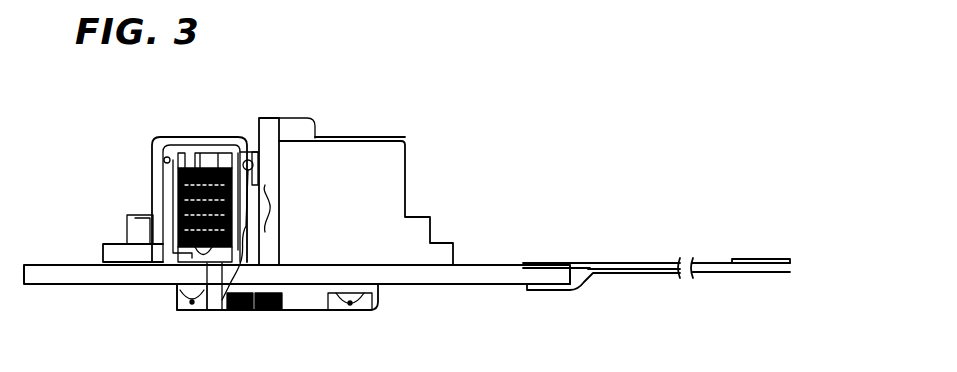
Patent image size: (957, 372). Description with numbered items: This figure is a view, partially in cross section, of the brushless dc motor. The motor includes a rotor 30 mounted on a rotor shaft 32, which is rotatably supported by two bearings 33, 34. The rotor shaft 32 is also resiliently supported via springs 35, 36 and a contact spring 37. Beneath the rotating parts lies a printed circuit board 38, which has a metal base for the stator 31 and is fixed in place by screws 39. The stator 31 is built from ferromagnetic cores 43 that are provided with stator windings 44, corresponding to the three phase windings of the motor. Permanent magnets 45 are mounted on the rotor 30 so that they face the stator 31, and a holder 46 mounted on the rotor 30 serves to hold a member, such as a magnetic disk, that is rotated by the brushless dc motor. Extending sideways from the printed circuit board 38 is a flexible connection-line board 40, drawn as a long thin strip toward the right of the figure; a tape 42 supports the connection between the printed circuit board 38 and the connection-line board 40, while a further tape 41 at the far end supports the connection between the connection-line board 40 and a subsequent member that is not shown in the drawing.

The rotor 30 is at (103, 248).
The stator 31 is at (217, 160).
The rotor shaft 32 is at (273, 155).
The bearing 33 is at (247, 160).
The bearing 34 is at (222, 301).
The spring 35 is at (265, 230).
The spring 36 is at (238, 312).
The contact spring 37 is at (272, 312).
The printed circuit board 38 is at (461, 287).
The screws 39 is at (178, 312).
The flexible connection-line board 40 is at (598, 263).
The tape 41 is at (748, 261).
The tape 42 is at (586, 292).
The ferromagnetic cores 43 is at (178, 165).
The stator windings 44 is at (205, 152).
The permanent magnets 45 is at (170, 172).
The holder 46 is at (125, 226).